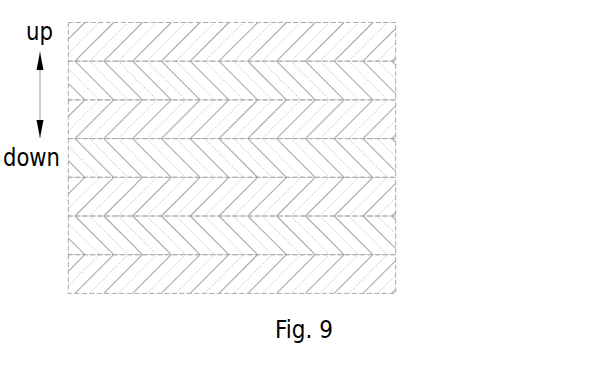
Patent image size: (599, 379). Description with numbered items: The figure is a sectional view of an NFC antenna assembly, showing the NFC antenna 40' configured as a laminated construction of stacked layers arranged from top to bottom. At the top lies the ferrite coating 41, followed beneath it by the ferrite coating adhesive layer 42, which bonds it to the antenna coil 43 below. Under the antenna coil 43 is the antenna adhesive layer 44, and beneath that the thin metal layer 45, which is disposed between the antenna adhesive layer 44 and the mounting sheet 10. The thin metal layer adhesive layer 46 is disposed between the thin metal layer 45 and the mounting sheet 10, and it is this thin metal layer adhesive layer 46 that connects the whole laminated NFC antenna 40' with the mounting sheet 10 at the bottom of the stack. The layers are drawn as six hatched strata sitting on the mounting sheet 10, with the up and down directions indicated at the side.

The ferrite coating 41 is at (396, 35).
The ferrite coating adhesive layer 42 is at (396, 72).
The antenna coil 43 is at (396, 110).
The antenna adhesive layer 44 is at (396, 153).
The thin metal layer 45 is at (396, 192).
The thin metal layer adhesive layer 46 is at (396, 230).
The mounting sheet 10 is at (396, 268).
The NFC antenna 40' is at (556, 138).